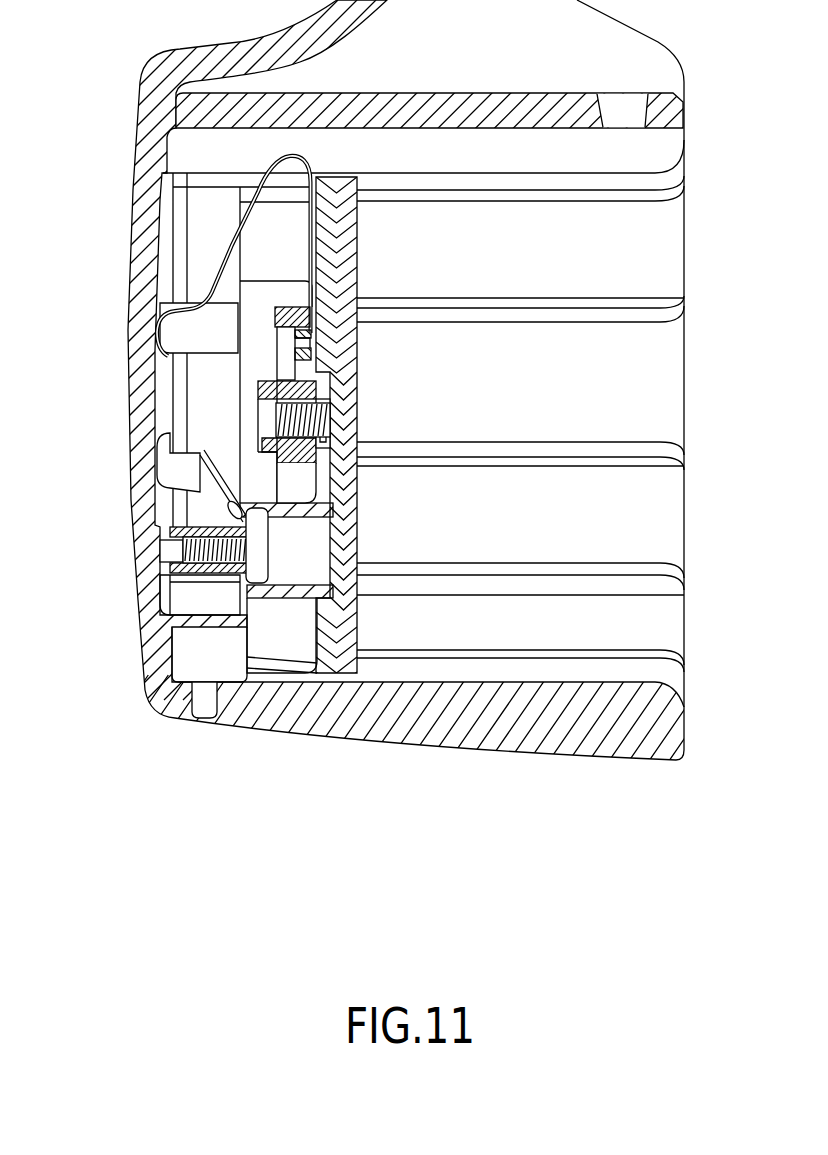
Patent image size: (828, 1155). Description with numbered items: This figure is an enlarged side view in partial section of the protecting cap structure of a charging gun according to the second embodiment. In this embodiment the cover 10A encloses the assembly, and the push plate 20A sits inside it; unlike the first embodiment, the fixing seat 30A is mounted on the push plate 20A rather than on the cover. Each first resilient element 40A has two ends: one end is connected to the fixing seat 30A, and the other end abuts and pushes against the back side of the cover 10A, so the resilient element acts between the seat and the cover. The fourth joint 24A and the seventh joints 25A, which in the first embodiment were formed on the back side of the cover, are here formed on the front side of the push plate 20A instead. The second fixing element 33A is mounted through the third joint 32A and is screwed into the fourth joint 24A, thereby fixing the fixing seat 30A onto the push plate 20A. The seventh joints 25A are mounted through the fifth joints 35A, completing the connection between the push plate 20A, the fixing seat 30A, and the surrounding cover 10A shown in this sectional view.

The cover 10A is at (445, 736).
The push plate 20A is at (325, 667).
The fourth joint 24A is at (260, 428).
The seventh joint 25A is at (278, 327).
The fixing seat 30A is at (276, 308).
The third joint 32A is at (260, 425).
The second fixing element 33A is at (262, 440).
The fifth joint 35A is at (293, 358).
The first resilient element 40A is at (208, 281).